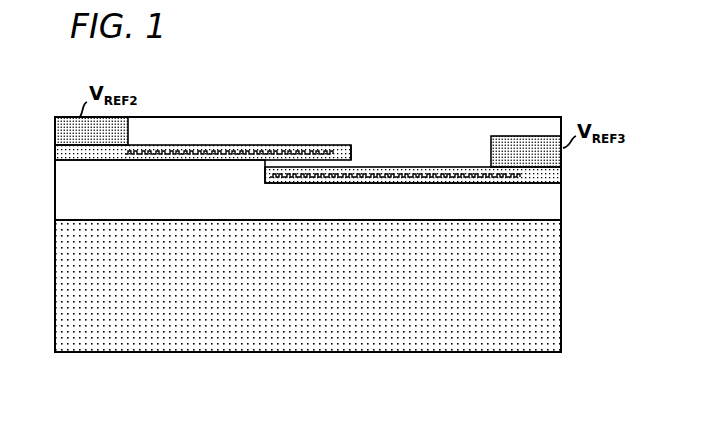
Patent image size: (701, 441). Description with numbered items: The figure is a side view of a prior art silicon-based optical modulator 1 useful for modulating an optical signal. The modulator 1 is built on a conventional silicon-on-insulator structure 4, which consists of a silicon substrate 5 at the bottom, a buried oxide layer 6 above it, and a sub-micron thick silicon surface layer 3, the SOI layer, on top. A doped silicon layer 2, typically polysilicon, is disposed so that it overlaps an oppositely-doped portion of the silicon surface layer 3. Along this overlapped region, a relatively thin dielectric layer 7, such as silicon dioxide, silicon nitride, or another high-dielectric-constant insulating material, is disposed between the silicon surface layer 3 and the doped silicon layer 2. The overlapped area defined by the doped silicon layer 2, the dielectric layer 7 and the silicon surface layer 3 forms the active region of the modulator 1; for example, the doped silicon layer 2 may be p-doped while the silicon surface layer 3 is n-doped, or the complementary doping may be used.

The silicon-based optical modulator 1 is at (538, 73).
The doped silicon layer 2 is at (183, 145).
The silicon surface layer 3 is at (562, 172).
The silicon-on-insulator structure 4 is at (642, 167).
The silicon substrate 5 is at (63, 278).
The buried oxide layer 6 is at (63, 186).
The dielectric layer 7 is at (352, 167).